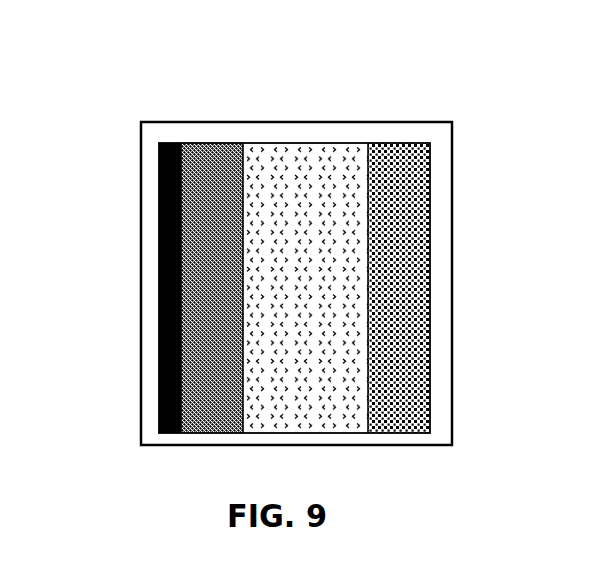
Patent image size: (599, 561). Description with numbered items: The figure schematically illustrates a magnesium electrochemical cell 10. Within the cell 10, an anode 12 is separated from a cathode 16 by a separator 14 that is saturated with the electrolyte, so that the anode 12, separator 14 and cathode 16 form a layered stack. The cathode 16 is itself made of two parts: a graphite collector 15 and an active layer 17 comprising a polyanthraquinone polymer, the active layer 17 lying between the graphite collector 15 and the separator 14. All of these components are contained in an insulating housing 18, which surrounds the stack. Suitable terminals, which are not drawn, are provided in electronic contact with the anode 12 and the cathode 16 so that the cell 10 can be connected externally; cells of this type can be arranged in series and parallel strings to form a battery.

The magnesium electrochemical cell 10 is at (267, 231).
The anode 12 is at (408, 160).
The separator 14 is at (284, 163).
The graphite collector 15 is at (165, 147).
The cathode 16 is at (272, 225).
The active layer 17 is at (222, 163).
The insulating housing 18 is at (452, 183).